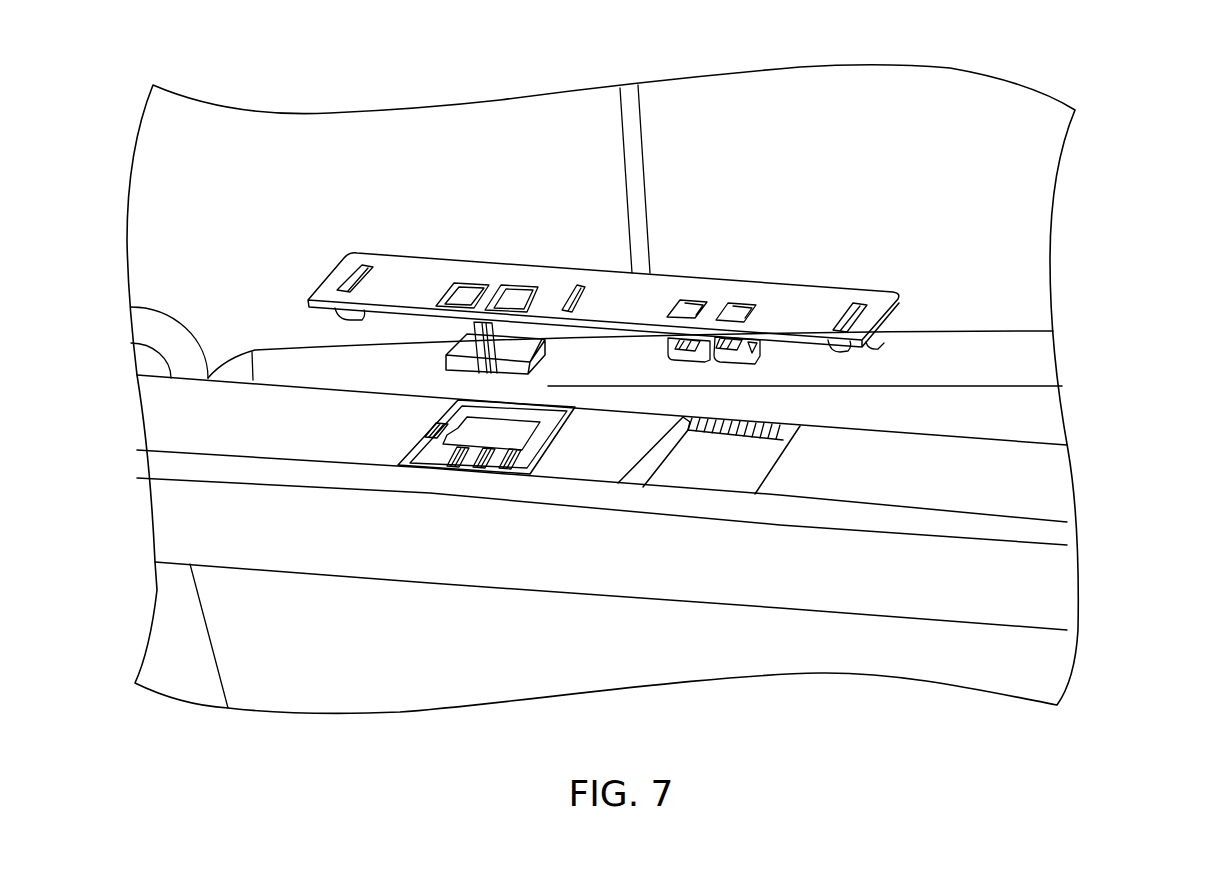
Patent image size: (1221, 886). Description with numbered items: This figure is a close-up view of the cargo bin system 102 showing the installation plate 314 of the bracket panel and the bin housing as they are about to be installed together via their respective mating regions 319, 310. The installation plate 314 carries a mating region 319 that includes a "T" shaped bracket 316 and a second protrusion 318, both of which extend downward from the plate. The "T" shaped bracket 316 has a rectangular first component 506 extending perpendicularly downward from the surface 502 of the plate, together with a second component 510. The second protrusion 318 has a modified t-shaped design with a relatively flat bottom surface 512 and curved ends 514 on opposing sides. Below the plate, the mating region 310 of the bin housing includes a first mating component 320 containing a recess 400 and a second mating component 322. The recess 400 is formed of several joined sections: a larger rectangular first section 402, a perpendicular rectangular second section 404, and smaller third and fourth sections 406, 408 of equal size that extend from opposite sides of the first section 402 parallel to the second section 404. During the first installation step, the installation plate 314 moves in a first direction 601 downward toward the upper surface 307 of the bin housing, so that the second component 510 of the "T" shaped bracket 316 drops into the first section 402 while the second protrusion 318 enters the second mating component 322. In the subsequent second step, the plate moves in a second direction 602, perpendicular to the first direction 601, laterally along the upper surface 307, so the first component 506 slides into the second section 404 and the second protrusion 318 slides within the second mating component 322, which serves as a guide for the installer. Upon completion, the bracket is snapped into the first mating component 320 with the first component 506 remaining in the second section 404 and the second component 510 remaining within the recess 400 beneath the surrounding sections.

The cargo bin system 102 is at (1113, 98).
The upper surface 307 is at (157, 437).
The mating region 310 is at (688, 495).
The installation plate 314 is at (876, 340).
The "T" shaped bracket 316 is at (427, 348).
The second protrusion 318 is at (730, 370).
The mating region 319 is at (627, 347).
The first mating component 320 is at (440, 455).
The second mating component 322 is at (705, 465).
The recess 400 is at (428, 479).
The first section 402 is at (547, 430).
The second section 404 is at (466, 469).
The third section 406 is at (455, 467).
The fourth section 408 is at (497, 470).
The surface 502 is at (623, 293).
The first component 506 is at (476, 330).
The second component 510 is at (548, 360).
The flat bottom surface 512 is at (714, 307).
The curved ends 514 is at (670, 353).
The first direction 601 is at (544, 375).
The second direction 602 is at (568, 460).